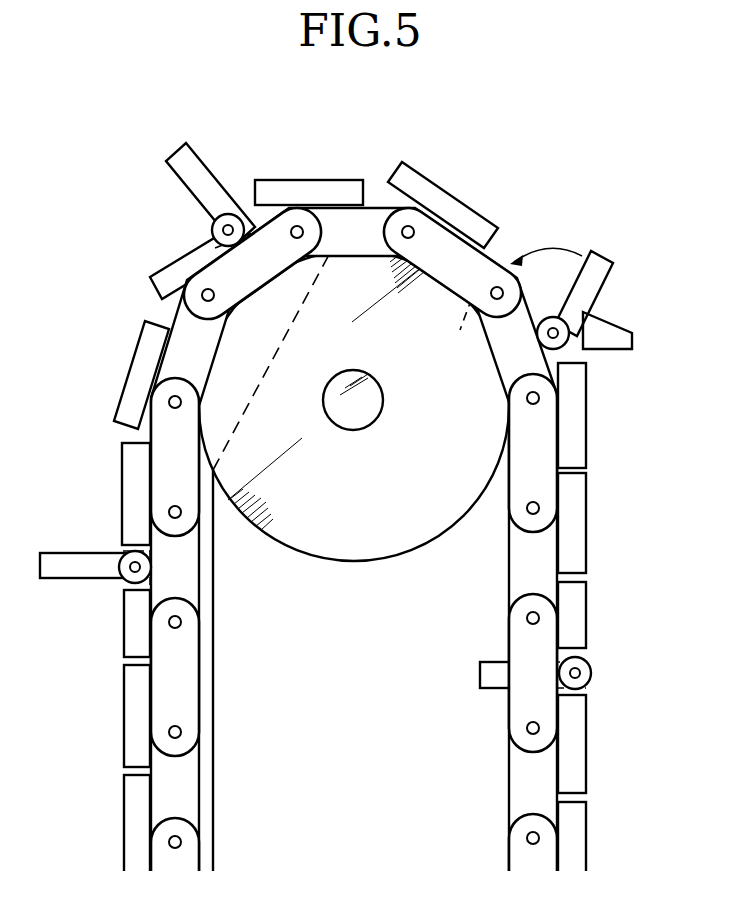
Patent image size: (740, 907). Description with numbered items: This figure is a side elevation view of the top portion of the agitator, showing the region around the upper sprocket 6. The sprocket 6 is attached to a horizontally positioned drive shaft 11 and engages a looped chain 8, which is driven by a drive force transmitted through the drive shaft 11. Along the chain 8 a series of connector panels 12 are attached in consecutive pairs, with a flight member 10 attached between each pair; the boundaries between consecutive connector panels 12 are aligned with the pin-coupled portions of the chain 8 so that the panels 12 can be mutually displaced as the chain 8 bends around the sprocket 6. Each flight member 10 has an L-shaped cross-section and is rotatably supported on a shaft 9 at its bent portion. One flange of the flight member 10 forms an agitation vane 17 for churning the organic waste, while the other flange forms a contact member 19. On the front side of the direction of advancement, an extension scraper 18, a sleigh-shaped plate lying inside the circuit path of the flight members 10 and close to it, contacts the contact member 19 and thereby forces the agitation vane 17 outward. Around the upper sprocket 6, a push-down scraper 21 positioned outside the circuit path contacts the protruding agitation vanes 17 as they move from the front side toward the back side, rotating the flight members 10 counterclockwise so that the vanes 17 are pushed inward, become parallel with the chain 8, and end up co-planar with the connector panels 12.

The sprocket 6 is at (337, 548).
The chain 8 is at (190, 784).
The shaft 9 is at (562, 346).
The flight member 10 is at (557, 318).
The drive shaft 11 is at (363, 412).
The connector panel 12 is at (402, 167).
The agitation vane 17 is at (608, 263).
The extension scraper 18 is at (213, 668).
The contact member 19 is at (462, 322).
The push-down scraper 21 is at (628, 334).